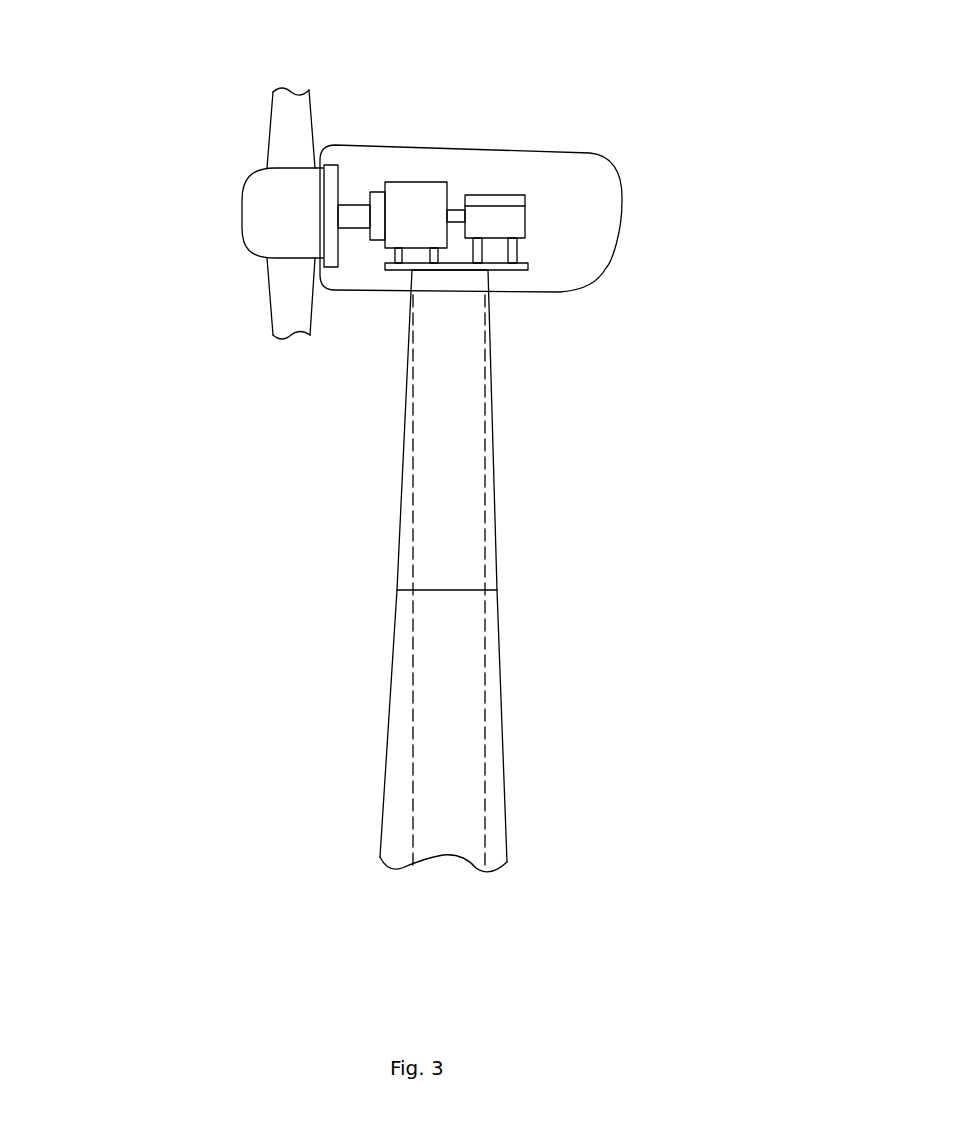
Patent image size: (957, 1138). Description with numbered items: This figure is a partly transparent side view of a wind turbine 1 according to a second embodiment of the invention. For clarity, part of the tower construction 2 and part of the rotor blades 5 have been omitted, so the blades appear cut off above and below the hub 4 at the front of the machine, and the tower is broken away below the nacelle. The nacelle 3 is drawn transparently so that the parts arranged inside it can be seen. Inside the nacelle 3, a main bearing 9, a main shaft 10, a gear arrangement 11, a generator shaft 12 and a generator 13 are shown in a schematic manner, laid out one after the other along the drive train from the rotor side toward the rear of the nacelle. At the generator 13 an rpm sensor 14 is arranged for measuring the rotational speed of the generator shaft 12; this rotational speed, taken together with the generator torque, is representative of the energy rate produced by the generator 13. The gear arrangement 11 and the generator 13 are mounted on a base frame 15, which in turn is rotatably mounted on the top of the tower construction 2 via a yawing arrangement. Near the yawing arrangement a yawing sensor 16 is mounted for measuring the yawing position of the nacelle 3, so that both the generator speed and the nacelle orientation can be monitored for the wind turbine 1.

The wind turbine 1 is at (183, 538).
The tower construction 2 is at (472, 625).
The nacelle 3 is at (620, 168).
The hub 4 is at (283, 211).
The rotor blades 5 is at (283, 130).
The main bearing 9 is at (331, 185).
The main shaft 10 is at (353, 217).
The gear arrangement 11 is at (420, 202).
The generator shaft 12 is at (452, 215).
The generator 13 is at (510, 213).
The rpm sensor 14 is at (472, 218).
The base frame 15 is at (400, 268).
The yawing sensor 16 is at (498, 268).